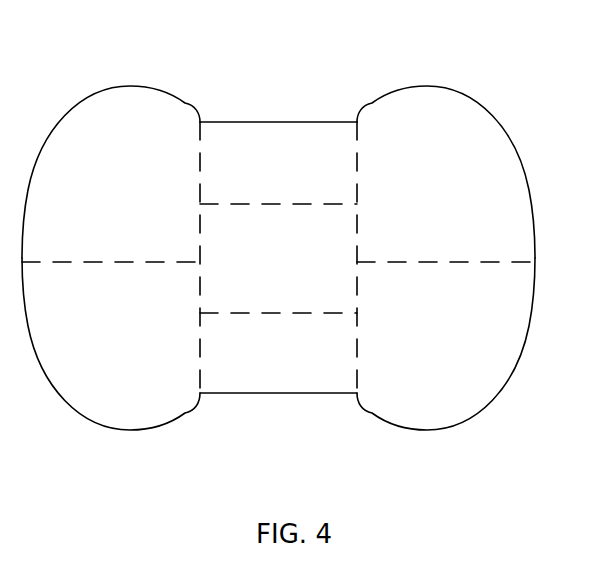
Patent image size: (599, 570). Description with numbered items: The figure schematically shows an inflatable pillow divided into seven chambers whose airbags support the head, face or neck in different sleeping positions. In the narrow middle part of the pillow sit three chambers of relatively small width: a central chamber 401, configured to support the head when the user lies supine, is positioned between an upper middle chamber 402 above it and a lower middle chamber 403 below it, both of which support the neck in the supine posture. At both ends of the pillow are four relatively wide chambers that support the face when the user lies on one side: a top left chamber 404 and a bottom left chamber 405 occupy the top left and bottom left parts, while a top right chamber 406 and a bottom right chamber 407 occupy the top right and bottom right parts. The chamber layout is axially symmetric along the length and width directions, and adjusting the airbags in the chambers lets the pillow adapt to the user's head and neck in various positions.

The central chamber 401 is at (300, 250).
The upper middle chamber 402 is at (273, 182).
The lower middle chamber 403 is at (273, 352).
The top left chamber 404 is at (121, 138).
The bottom left chamber 405 is at (120, 348).
The top right chamber 406 is at (458, 142).
The bottom right chamber 407 is at (460, 352).